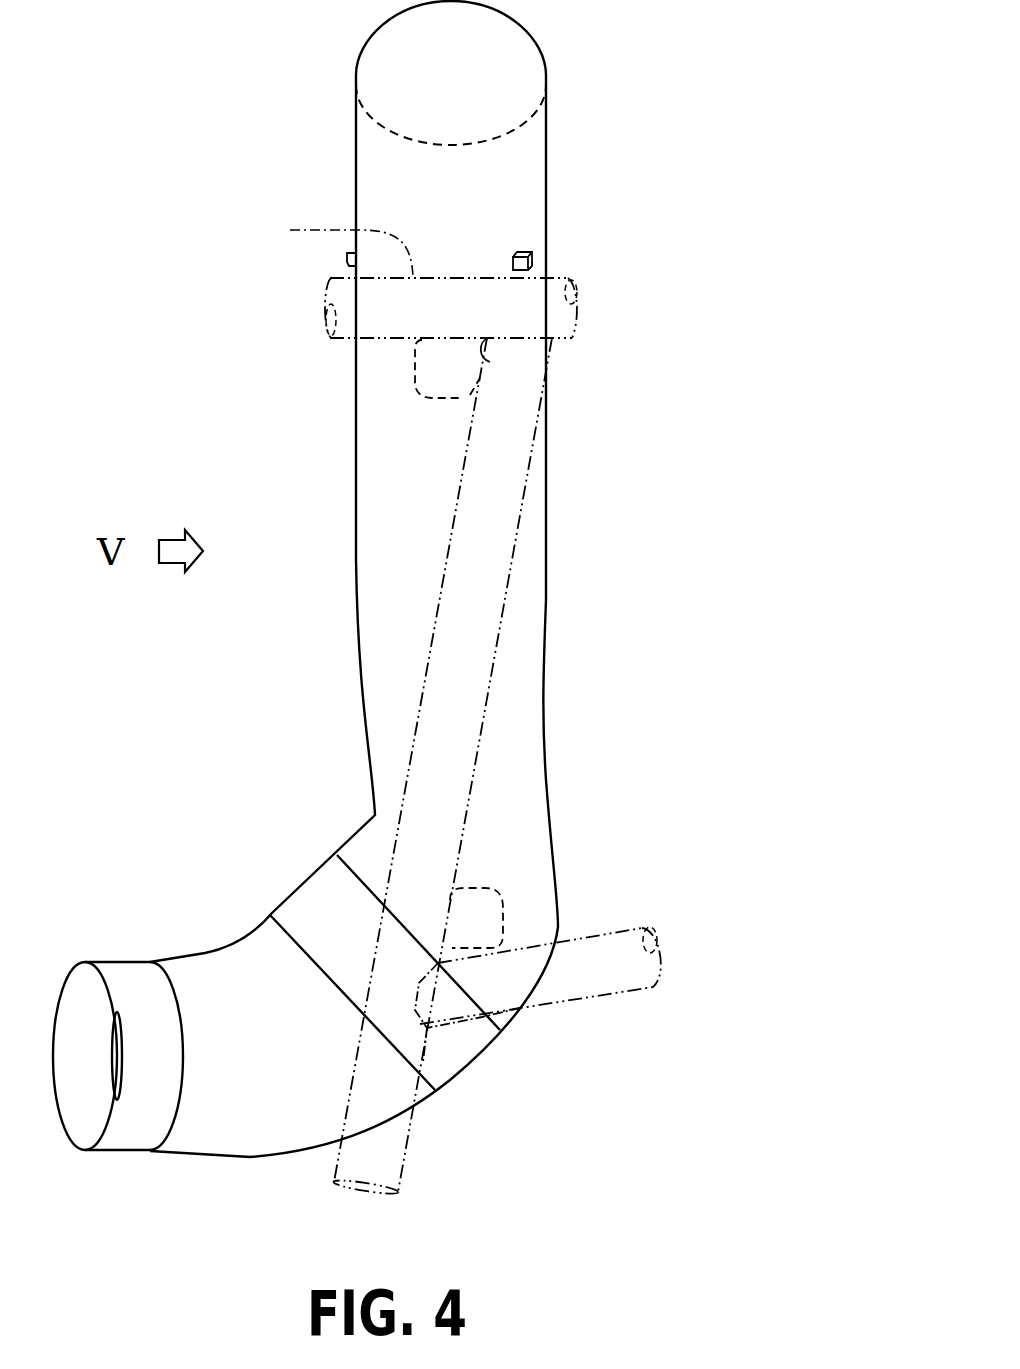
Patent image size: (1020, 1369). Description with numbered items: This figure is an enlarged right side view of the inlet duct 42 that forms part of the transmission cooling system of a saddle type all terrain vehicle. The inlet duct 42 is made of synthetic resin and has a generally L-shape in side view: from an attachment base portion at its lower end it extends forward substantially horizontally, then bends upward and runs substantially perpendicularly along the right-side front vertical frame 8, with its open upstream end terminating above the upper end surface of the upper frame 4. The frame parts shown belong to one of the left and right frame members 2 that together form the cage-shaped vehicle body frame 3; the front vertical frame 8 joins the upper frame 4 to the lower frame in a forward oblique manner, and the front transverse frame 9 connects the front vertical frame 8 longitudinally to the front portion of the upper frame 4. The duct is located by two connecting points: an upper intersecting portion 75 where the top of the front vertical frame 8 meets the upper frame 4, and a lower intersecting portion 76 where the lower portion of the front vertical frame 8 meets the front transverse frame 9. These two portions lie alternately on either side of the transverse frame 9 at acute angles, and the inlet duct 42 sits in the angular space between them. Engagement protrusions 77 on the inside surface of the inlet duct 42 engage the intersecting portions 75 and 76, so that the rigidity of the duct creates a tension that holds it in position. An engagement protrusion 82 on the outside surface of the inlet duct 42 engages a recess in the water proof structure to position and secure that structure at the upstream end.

The frame member 2 is at (513, 298).
The vehicle body frame 3 is at (583, 278).
The upper frame 4 is at (339, 246).
The front vertical frame 8 is at (500, 558).
The front transverse frame 9 is at (612, 930).
The inlet duct 42 is at (561, 456).
The intersecting portion 75 is at (490, 362).
The intersecting portion 76 is at (482, 958).
The engagement protrusion 77 is at (418, 372).
The engagement protrusion 82 is at (347, 258).